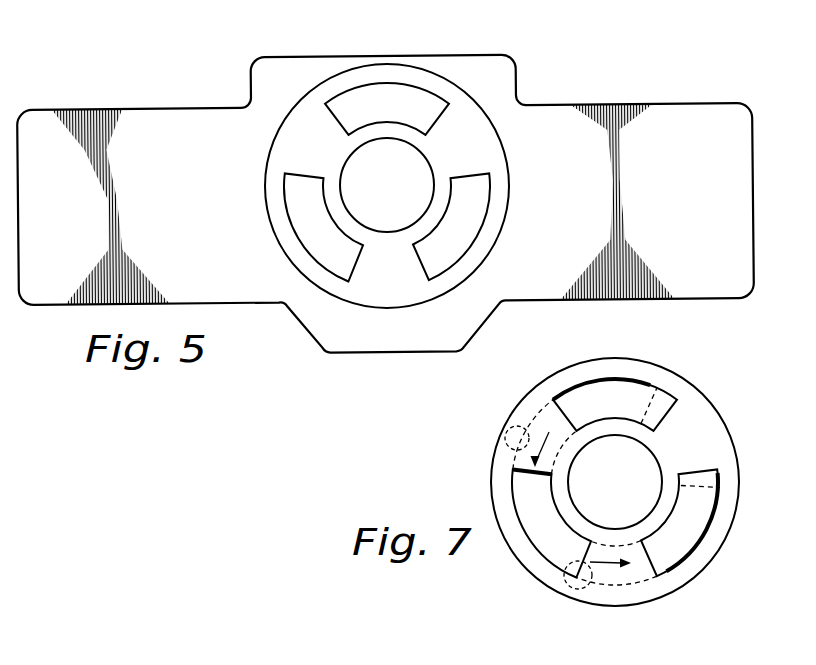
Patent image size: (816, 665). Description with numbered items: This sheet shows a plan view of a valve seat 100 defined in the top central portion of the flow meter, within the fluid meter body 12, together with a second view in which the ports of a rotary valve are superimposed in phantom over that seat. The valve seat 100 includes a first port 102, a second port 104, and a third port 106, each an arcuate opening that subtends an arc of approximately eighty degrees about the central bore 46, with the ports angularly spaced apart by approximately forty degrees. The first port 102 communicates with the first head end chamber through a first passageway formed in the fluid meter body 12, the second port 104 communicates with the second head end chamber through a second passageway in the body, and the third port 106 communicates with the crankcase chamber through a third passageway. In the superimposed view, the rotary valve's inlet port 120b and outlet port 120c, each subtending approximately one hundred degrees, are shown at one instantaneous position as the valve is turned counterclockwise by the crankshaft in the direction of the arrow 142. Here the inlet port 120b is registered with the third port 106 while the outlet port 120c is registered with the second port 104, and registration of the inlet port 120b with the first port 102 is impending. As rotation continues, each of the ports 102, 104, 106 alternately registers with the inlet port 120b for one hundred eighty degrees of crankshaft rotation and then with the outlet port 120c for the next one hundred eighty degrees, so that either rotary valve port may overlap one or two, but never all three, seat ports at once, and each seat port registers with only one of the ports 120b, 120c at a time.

In FIG. 5, the fluid meter body 12 is at (93, 104).
In FIG. 5, the valve seat 100 is at (329, 155).
In FIG. 5, the bore 46 is at (352, 155).
In FIG. 5, the first port 102 is at (302, 207).
In FIG. 7, the first port 102 is at (522, 498).
In FIG. 5, the second port 104 is at (472, 207).
In FIG. 7, the second port 104 is at (708, 478).
In FIG. 5, the third port 106 is at (412, 100).
In FIG. 7, the third port 106 is at (672, 402).
In FIG. 7, the inlet port 120b is at (504, 434).
In FIG. 7, the outlet port 120c is at (563, 583).
In FIG. 7, the arrow 142 is at (534, 460).